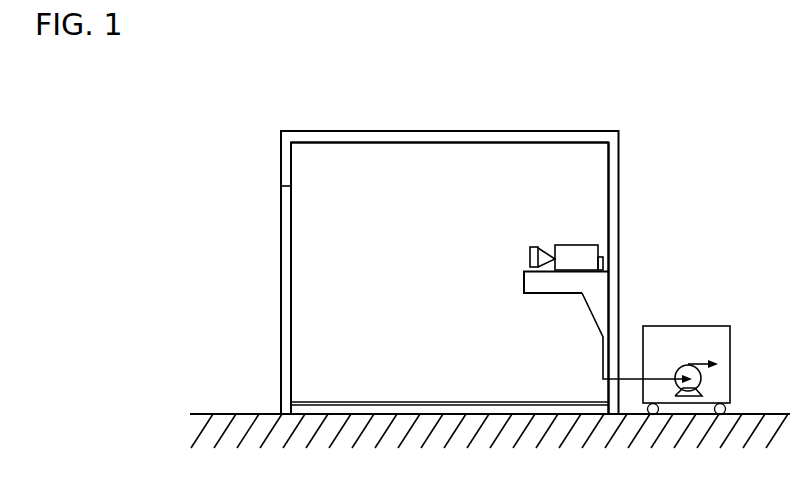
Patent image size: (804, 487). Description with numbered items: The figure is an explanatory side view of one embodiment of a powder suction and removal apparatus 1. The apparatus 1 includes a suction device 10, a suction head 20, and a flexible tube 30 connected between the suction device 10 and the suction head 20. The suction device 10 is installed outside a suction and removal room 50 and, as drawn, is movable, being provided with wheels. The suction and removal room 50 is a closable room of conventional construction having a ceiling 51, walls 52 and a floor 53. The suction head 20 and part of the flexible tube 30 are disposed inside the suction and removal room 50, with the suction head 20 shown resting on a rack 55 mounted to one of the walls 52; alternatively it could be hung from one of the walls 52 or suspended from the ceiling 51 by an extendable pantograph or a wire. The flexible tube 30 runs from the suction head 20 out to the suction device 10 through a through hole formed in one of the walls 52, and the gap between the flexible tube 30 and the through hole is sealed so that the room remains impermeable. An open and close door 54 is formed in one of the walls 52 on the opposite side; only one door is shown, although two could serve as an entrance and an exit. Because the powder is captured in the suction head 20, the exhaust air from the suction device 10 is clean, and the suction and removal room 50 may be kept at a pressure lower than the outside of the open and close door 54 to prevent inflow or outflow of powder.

The suction and removal apparatus 1 is at (688, 216).
The suction device 10 is at (680, 326).
The suction head 20 is at (600, 246).
The flexible tube 30 is at (624, 379).
The suction and removal room 50 is at (507, 113).
The ceiling 51 is at (387, 143).
The walls 52 is at (608, 176).
The floor 53 is at (362, 401).
The open and close door 54 is at (281, 253).
The rack 55 is at (553, 295).